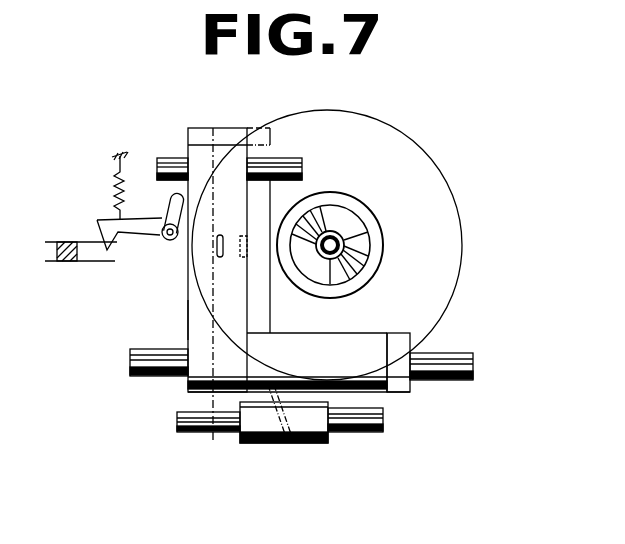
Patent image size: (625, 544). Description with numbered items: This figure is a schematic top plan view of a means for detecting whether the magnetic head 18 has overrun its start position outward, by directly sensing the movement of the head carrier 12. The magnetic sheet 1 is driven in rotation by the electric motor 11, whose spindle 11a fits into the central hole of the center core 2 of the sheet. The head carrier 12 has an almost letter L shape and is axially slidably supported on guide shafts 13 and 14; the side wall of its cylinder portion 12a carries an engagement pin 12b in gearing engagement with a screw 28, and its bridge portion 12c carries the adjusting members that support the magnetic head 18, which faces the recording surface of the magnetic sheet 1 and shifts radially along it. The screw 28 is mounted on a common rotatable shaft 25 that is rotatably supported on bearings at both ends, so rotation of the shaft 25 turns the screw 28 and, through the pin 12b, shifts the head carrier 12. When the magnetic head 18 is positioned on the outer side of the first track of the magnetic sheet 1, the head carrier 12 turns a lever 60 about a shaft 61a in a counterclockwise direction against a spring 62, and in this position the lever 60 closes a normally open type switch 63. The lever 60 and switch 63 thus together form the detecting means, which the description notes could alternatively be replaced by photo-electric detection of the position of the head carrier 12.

The magnetic sheet 1 is at (435, 155).
The center core 2 is at (337, 218).
The electric motor 11 is at (370, 208).
The spindle 11a is at (344, 246).
The head carrier 12 is at (400, 378).
The cylinder portion 12a is at (213, 392).
The engagement pin 12b is at (310, 396).
The bridge portion 12c is at (203, 322).
The guide shaft 13 is at (130, 360).
The guide shaft 14 is at (295, 160).
The magnetic head 18 is at (217, 250).
The rotatable shaft 25 is at (353, 433).
The screw 28 is at (253, 443).
The lever 60 is at (97, 224).
The shaft 61a is at (163, 215).
The spring 62 is at (110, 192).
The switch 63 is at (63, 262).